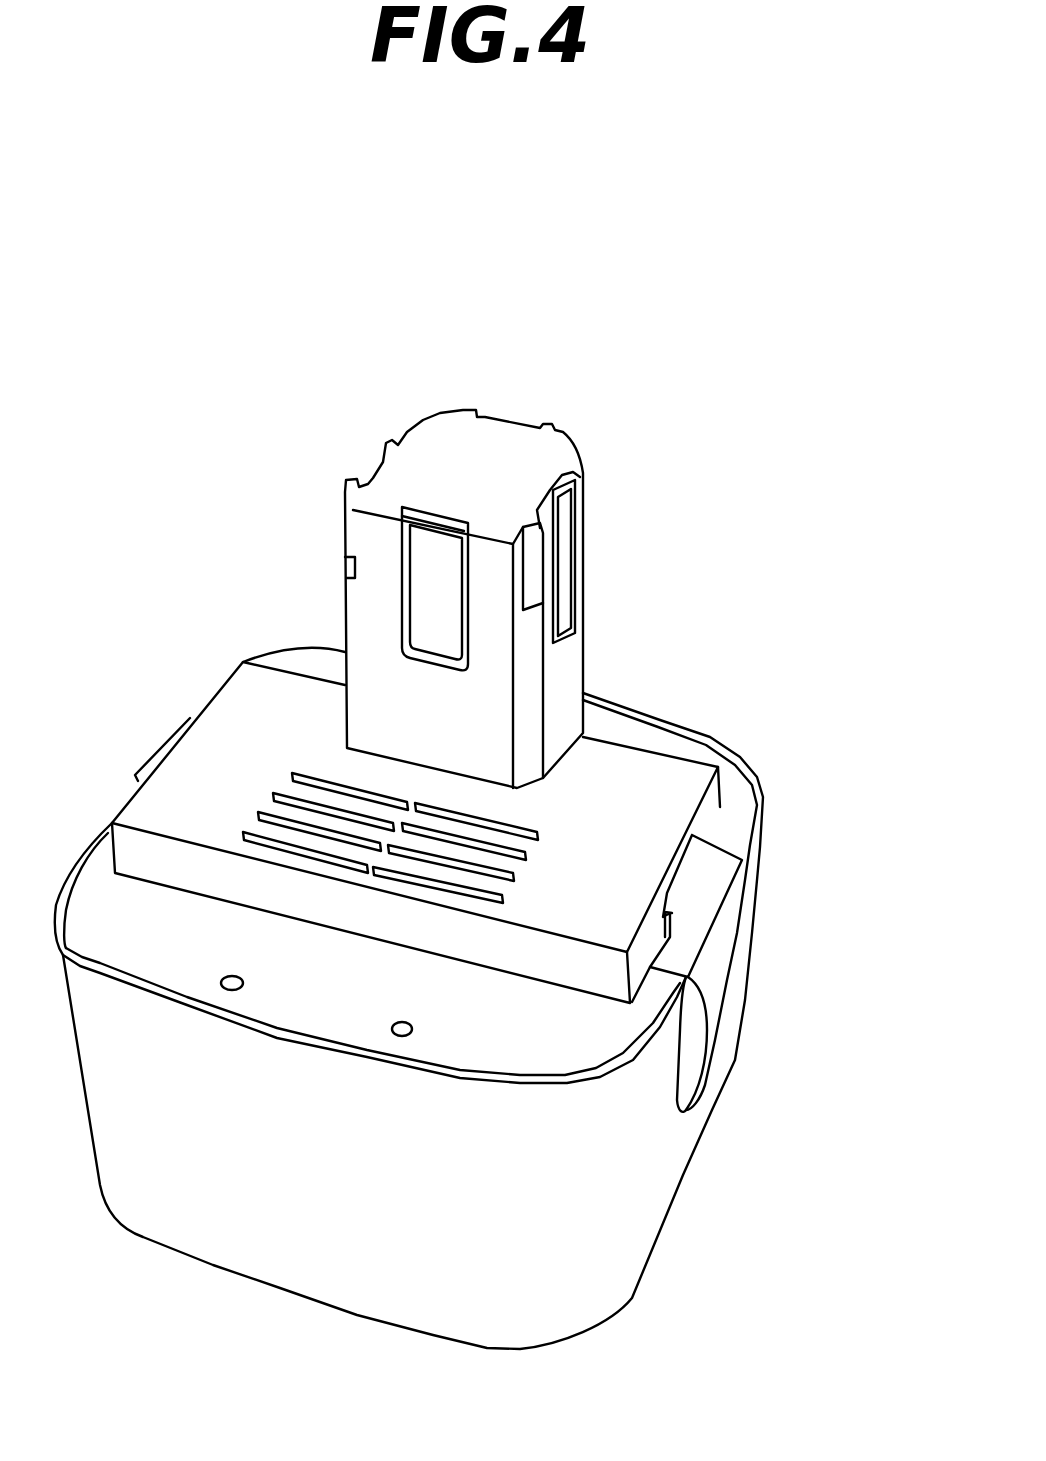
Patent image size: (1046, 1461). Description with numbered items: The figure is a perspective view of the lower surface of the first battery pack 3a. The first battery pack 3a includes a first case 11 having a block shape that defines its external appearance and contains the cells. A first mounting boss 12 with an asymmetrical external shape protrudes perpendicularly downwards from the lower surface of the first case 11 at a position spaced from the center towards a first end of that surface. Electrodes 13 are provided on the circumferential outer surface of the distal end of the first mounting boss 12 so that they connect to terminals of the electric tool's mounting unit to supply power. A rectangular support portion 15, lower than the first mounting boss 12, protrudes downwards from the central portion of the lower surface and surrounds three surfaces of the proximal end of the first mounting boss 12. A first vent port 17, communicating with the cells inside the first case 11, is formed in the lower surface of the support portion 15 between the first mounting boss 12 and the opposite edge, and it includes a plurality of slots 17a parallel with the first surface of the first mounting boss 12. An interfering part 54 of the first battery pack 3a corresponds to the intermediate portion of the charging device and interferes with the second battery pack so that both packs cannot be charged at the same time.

The first battery pack 3a is at (627, 425).
The first case 11 is at (518, 1033).
The first mounting boss 12 is at (517, 599).
The electrodes 13 is at (557, 560).
The support portion 15 is at (195, 770).
The first vent port 17 is at (499, 725).
The slots 17a is at (335, 783).
The interfering part 54 is at (583, 910).